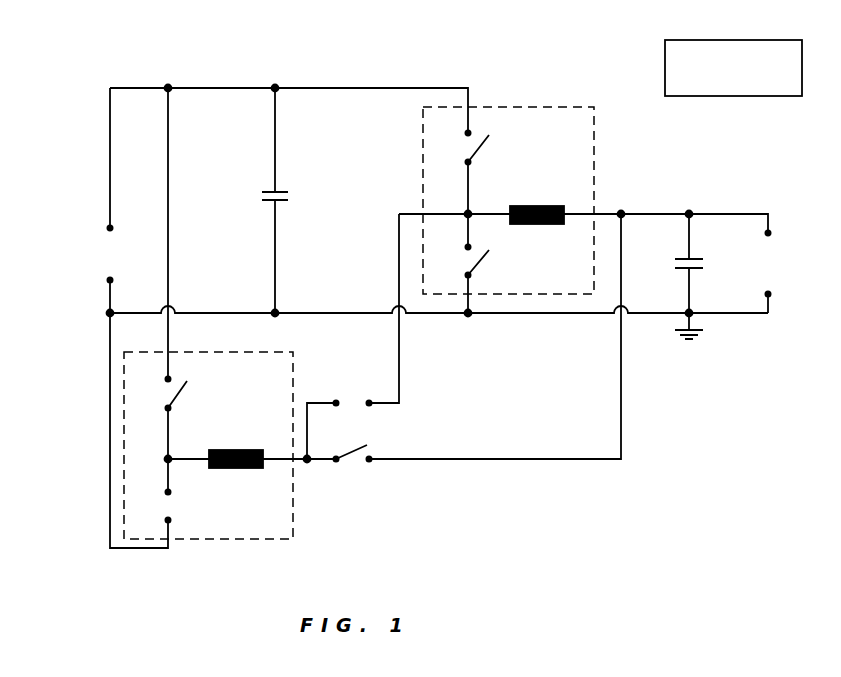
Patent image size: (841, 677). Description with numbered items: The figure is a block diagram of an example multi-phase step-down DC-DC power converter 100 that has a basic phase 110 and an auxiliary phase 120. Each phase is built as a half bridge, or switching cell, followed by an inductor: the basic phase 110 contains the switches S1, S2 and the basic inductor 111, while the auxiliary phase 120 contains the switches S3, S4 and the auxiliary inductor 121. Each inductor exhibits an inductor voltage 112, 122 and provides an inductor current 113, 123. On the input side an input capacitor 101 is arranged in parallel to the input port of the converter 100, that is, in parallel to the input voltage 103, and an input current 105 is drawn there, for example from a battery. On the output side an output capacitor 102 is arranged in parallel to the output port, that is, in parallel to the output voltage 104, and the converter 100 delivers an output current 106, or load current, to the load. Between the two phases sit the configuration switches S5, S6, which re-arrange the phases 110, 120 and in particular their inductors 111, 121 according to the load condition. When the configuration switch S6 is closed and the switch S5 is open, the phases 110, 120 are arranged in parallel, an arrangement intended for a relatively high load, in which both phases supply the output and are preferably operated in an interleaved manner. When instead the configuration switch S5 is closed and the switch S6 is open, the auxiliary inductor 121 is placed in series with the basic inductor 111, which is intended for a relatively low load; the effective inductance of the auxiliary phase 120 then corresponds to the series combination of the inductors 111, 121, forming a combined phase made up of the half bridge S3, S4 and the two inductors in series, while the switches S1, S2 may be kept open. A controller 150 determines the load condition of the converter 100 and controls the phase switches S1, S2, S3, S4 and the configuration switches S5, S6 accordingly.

The multi-phase power converter 100 is at (413, 317).
The input capacitor 101 is at (258, 197).
The output capacitor 102 is at (668, 265).
The input voltage 103 is at (90, 232).
The output voltage 104 is at (793, 291).
The input current 105 is at (97, 120).
The output current 106 is at (754, 200).
The basic phase 110 is at (540, 210).
The basic inductor 111 is at (509, 207).
The inductor voltage 112 is at (563, 192).
The inductor current 113 is at (559, 238).
The auxiliary phase 120 is at (221, 426).
The auxiliary inductor 121 is at (208, 452).
The inductor voltage 122 is at (262, 437).
The inductor current 123 is at (259, 483).
The controller 150 is at (665, 62).
The phase switch S1 is at (462, 172).
The phase switch S2 is at (462, 263).
The phase switch S3 is at (162, 386).
The phase switch S4 is at (153, 491).
The configuration switch S5 is at (352, 390).
The configuration switch S6 is at (464, 338).